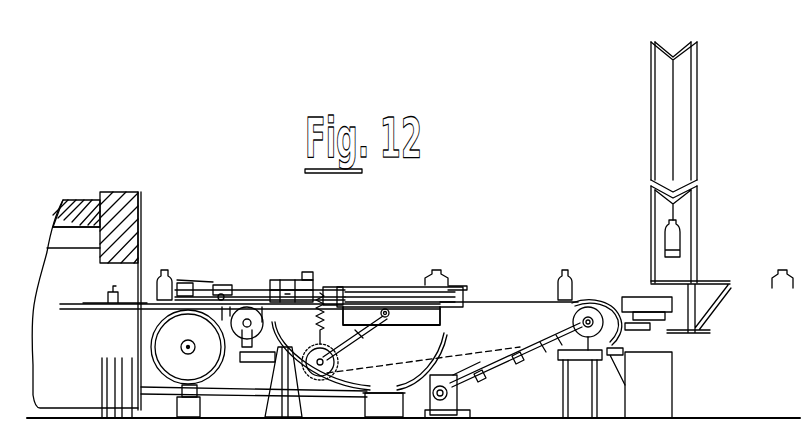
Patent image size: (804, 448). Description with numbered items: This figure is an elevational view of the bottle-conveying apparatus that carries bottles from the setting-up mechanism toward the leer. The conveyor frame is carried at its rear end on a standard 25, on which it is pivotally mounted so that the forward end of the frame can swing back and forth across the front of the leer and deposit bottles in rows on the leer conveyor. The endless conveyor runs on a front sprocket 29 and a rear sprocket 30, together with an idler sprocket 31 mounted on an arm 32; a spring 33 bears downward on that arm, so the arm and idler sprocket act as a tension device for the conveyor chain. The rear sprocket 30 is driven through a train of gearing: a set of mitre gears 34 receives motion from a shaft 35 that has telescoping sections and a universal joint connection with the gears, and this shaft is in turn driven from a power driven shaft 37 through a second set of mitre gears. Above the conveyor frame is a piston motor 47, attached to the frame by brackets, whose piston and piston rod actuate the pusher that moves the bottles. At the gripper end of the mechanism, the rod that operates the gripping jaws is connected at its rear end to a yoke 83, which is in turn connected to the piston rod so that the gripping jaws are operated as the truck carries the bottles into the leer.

The standard 25 is at (563, 390).
The front sprocket 29 is at (231, 326).
The rear sprocket 30 is at (602, 305).
The idler sprocket 31 is at (330, 373).
The arm 32 is at (362, 337).
The spring 33 is at (317, 328).
The mitre gears 34 is at (577, 308).
The shaft 35 is at (522, 348).
The power driven shaft 37 is at (448, 400).
The piston motor 47 is at (362, 297).
The yoke 83 is at (288, 280).